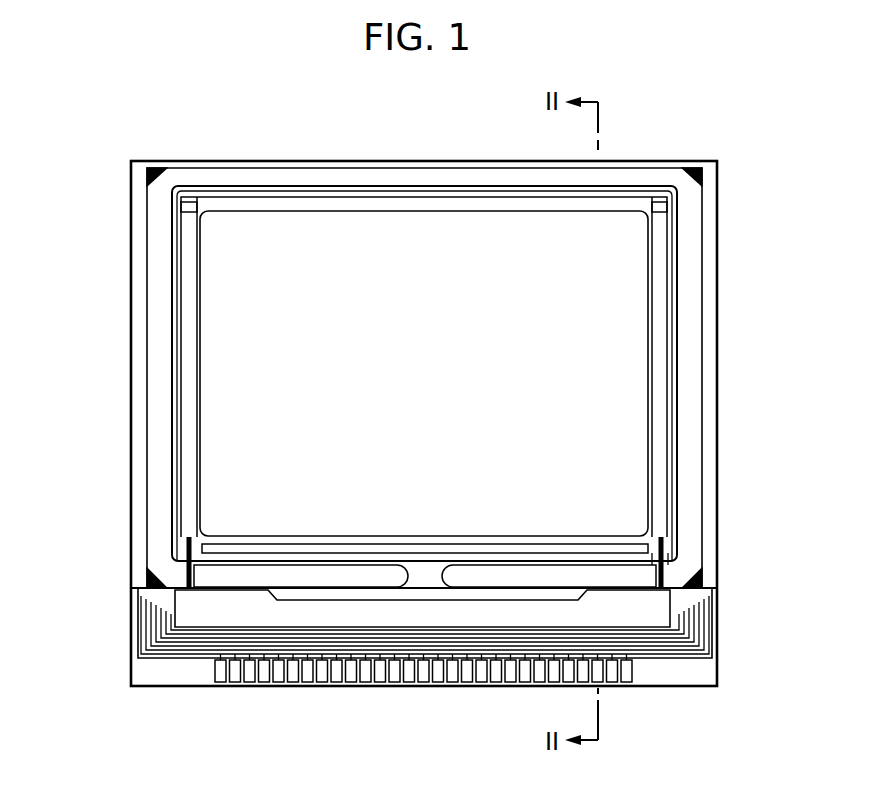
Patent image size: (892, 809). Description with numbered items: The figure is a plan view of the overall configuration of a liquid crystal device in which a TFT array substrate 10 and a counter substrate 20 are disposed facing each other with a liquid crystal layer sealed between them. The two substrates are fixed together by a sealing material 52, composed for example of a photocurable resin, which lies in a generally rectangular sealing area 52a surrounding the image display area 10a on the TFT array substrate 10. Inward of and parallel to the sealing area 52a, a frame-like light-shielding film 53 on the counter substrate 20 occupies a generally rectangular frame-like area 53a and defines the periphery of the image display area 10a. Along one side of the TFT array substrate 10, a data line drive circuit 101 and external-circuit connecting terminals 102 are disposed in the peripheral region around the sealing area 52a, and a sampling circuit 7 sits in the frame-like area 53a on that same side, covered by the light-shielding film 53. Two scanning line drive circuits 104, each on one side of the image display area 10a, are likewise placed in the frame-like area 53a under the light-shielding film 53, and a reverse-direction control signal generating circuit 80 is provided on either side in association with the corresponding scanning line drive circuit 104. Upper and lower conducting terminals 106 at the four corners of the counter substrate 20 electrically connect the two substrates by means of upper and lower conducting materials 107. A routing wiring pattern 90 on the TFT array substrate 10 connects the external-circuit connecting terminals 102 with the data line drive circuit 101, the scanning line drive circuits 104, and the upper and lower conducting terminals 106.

The TFT array substrate 10 is at (252, 161).
The image display area 10a is at (245, 330).
The counter substrate 20 is at (447, 168).
The reverse-direction control signal generating circuit 80 is at (189, 203).
The upper and lower conducting terminals 106 is at (147, 182).
The upper and lower conducting materials 107 is at (705, 589).
The sealing material 52 is at (690, 290).
The sealing area 52a is at (690, 232).
The scanning line drive circuits 104 is at (663, 375).
The sampling circuit 7 is at (588, 548).
The frame-like light-shielding film 53 is at (672, 545).
The frame-like area 53a is at (665, 553).
The routing wiring pattern 90 is at (140, 637).
The data line drive circuit 101 is at (200, 617).
The external-circuit connecting terminals 102 is at (392, 676).